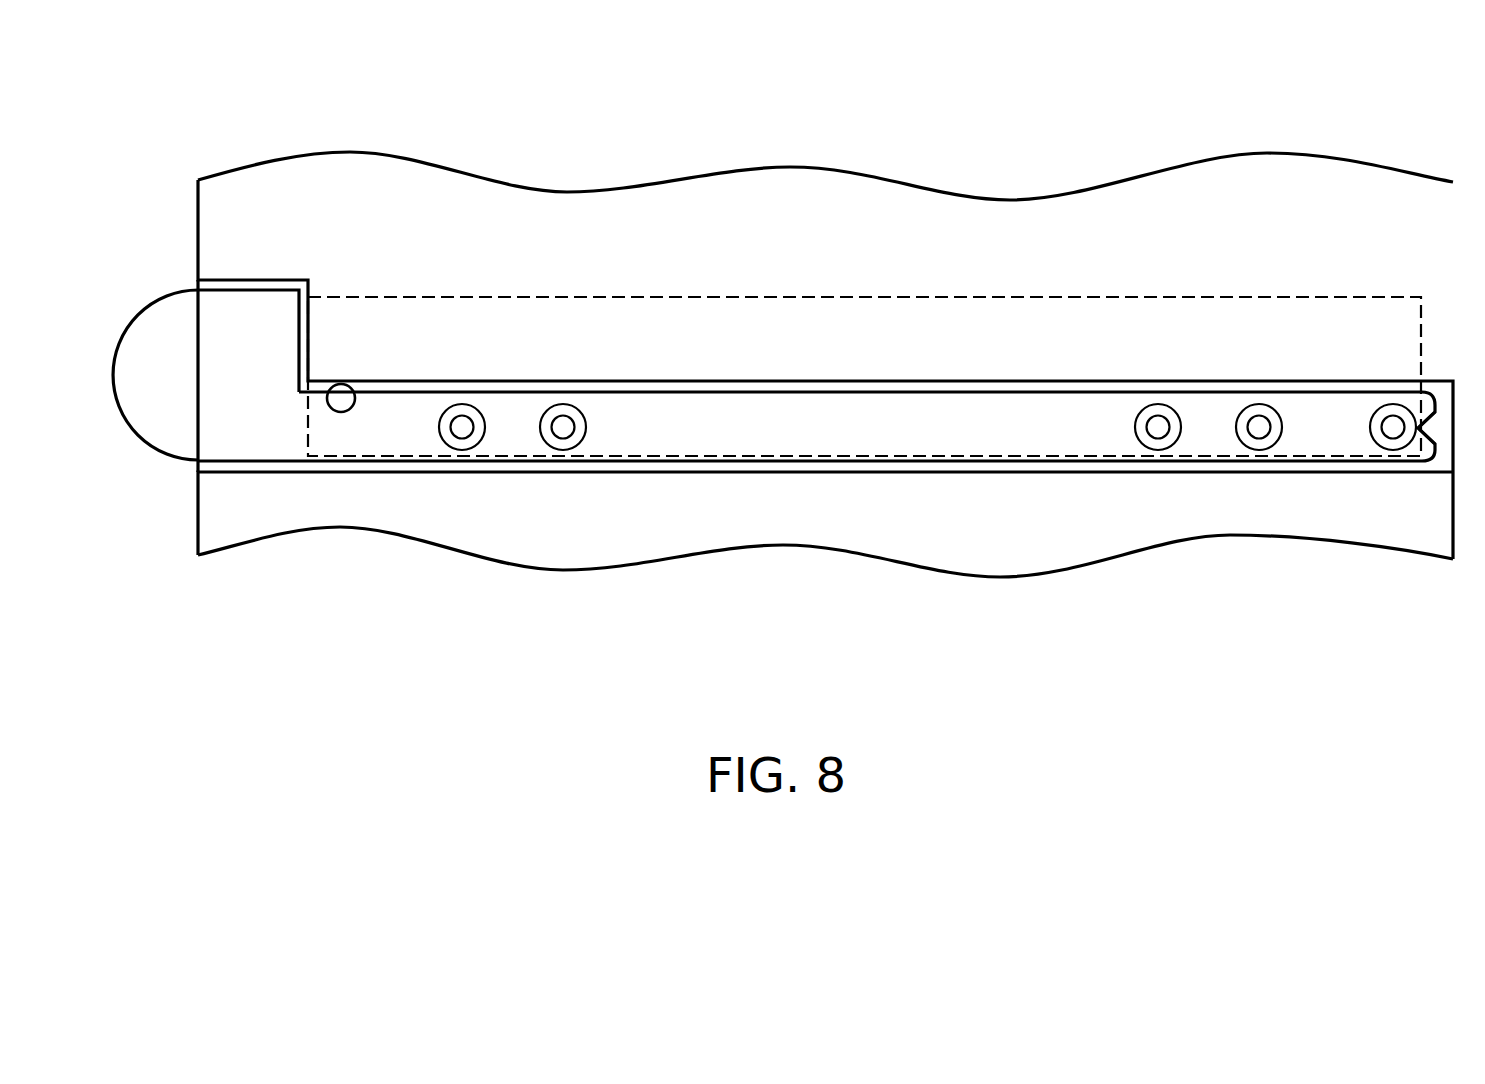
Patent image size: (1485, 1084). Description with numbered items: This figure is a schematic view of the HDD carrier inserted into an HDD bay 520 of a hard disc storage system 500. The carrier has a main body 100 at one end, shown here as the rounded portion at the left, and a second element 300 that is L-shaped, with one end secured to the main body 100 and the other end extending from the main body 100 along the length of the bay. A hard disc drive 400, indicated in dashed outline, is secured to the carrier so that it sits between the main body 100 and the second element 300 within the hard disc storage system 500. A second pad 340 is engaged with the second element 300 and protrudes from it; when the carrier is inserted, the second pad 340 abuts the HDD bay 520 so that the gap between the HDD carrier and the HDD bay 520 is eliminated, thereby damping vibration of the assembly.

The main body 100 is at (177, 428).
The second element 300 is at (810, 430).
The second pad 340 is at (341, 402).
The hard disc drive 400 is at (908, 296).
The hard disc storage system 500 is at (222, 233).
The HDD bay 520 is at (1442, 430).